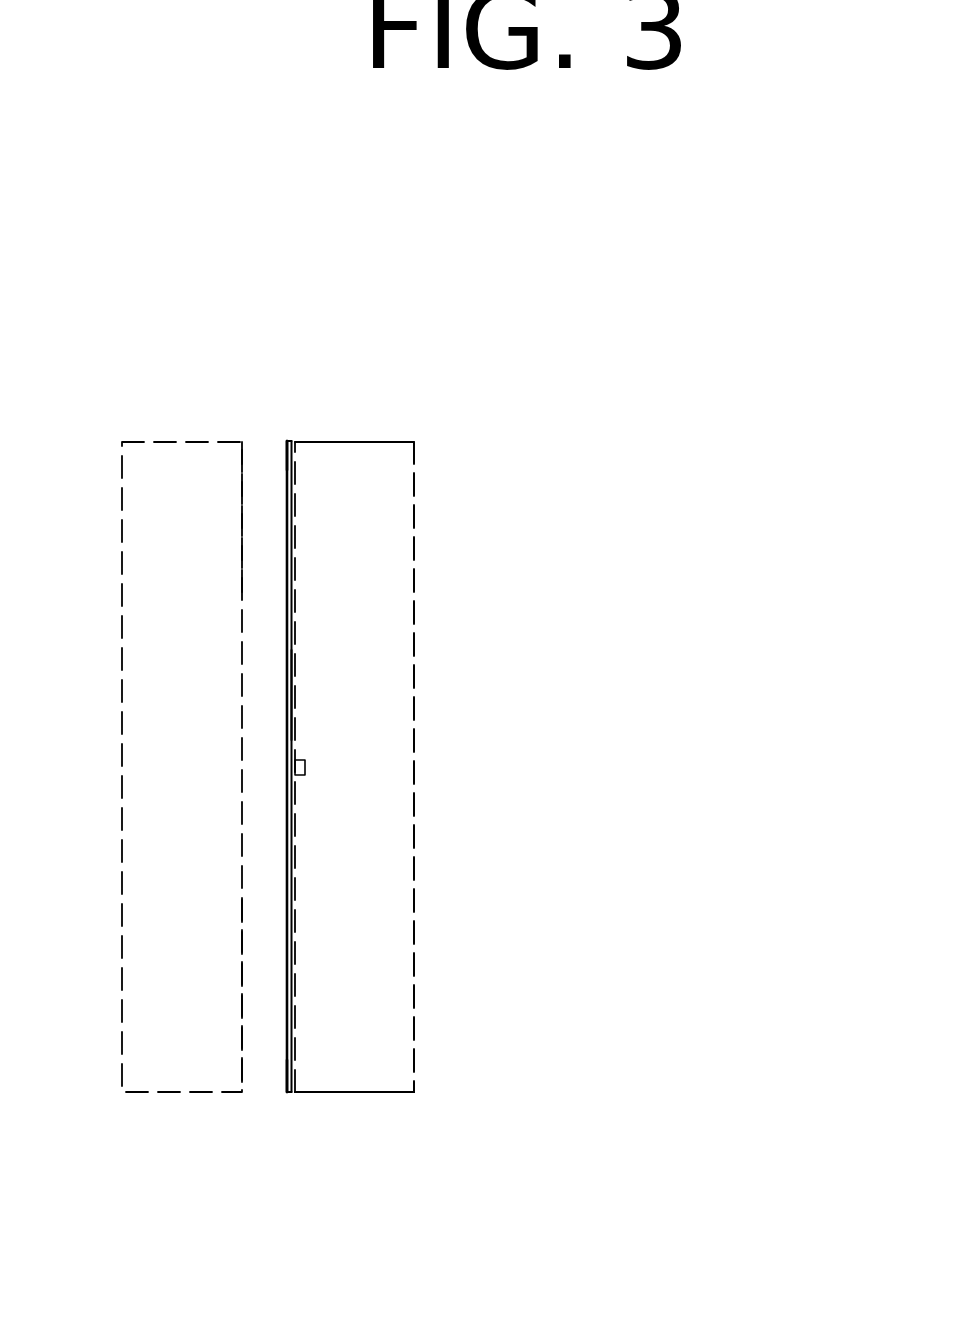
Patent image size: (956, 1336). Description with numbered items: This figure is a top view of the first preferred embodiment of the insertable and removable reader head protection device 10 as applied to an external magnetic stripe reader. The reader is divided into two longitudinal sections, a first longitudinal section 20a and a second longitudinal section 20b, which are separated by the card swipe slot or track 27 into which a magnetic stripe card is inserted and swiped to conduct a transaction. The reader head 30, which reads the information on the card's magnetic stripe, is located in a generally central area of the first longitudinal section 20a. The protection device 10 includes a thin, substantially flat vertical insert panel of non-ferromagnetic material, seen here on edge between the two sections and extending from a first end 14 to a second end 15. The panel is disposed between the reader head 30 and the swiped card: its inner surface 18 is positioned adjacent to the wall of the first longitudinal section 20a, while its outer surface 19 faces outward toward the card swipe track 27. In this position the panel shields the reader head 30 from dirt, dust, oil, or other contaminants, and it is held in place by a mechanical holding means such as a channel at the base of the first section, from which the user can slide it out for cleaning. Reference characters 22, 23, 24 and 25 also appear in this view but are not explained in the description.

The insertable and removable reader head protection device 10 is at (285, 402).
The first end 14 is at (292, 1094).
The second end 15 is at (290, 441).
The inner surface 18 is at (292, 692).
The outer surface 19 is at (287, 552).
The first longitudinal section 20a is at (405, 380).
The second longitudinal section 20b is at (162, 388).
The cavity 22 is at (371, 547).
The side wall 23 is at (415, 597).
The bottom wall 24 is at (340, 1094).
The top wall 25 is at (363, 440).
The card swipe slot or track 27 is at (270, 1063).
The reader head 30 is at (305, 768).